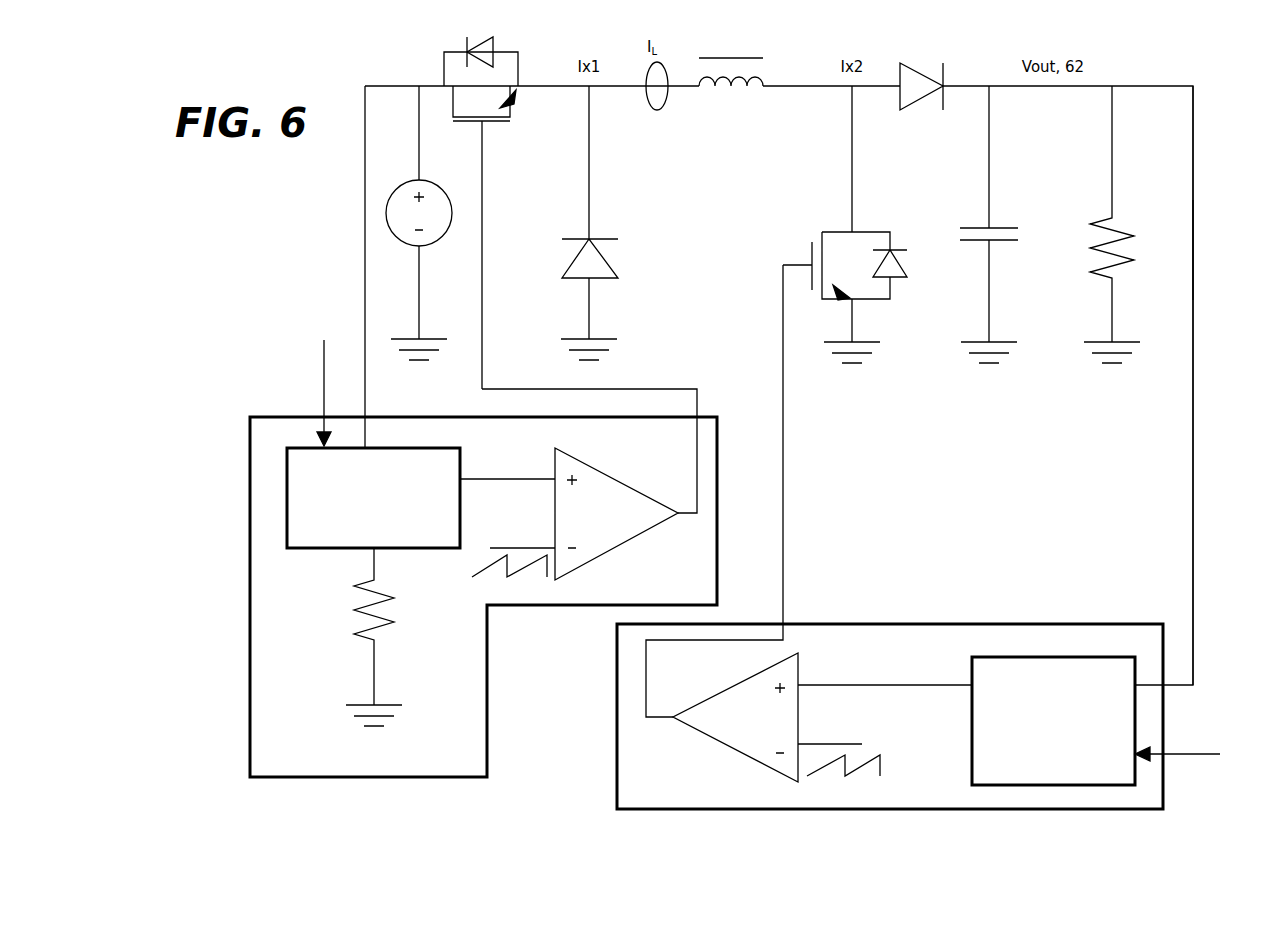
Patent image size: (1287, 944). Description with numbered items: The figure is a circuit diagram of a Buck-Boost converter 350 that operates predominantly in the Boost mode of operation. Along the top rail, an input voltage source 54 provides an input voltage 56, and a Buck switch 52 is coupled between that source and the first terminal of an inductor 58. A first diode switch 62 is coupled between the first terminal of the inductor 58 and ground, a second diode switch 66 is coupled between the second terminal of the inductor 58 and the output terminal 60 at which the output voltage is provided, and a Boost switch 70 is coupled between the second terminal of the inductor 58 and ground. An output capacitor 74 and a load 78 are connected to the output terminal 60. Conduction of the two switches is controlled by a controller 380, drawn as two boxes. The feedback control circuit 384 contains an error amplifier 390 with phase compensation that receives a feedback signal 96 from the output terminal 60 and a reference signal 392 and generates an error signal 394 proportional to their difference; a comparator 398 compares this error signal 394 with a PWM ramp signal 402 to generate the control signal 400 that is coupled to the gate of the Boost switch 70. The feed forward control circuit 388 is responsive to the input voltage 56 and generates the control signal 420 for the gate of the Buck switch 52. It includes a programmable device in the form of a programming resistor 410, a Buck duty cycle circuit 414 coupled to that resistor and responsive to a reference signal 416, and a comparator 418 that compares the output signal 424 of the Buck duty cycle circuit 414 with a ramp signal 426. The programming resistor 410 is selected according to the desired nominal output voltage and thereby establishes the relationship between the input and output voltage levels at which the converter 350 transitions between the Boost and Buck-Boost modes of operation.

The Buck switch Q1 52 is at (481, 201).
The input voltage source 54 is at (434, 230).
The input voltage Vin 56 is at (391, 119).
The inductor 58 is at (727, 97).
The output terminal 60 is at (990, 86).
The diode D1 (second switch) / output voltage Vout 62 is at (572, 262).
The diode D2 (third switch) 66 is at (922, 101).
The Boost switch Q2 70 is at (848, 224).
The output capacitor Co 74 is at (978, 228).
The load Ro 78 is at (1103, 221).
The feedback signal 96 is at (1190, 169).
The converter 350 is at (1228, 242).
The controller 380 is at (611, 722).
The feedback control circuit 384 is at (890, 716).
The feed forward control circuit 388 is at (483, 597).
The error amplifier 390 is at (1053, 721).
The reference signal Vref 392 is at (1197, 752).
The error signal Vc 394 is at (935, 688).
The comparator 398 is at (735, 717).
The control signal 400 is at (784, 526).
The PWM ramp signal 402 is at (835, 743).
The programmable device Rprogram 410 is at (360, 636).
The Buck duty cycle circuit 414 is at (373, 498).
The reference signal Vref 416 is at (323, 381).
The comparator 418 is at (616, 514).
The control signal 420 is at (672, 387).
The output signal 424 is at (511, 478).
The ramp signal 426 is at (523, 546).